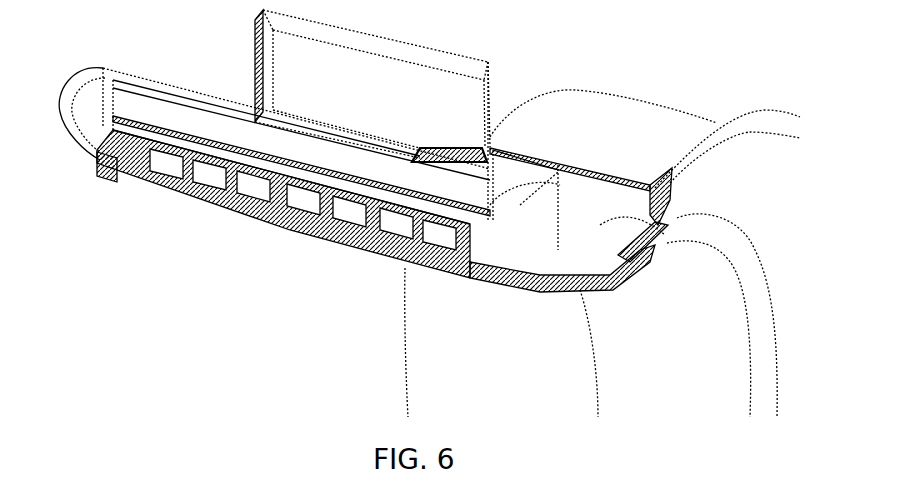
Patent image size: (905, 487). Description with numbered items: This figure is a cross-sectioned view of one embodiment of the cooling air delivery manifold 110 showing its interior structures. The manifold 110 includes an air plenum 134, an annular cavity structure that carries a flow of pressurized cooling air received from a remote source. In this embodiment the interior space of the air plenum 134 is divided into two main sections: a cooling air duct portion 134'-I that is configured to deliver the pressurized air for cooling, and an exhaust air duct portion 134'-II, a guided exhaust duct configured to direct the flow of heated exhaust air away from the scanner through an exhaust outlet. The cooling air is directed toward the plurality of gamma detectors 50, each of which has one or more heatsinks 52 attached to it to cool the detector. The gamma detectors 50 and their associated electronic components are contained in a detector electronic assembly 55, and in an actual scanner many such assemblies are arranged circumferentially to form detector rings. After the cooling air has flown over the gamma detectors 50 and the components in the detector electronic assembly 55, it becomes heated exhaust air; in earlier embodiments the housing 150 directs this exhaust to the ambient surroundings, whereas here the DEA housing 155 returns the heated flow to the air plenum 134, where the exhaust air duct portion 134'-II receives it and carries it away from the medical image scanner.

The housing 150 is at (128, 85).
The DEA housing 155 is at (201, 122).
The gamma detectors 50 is at (215, 202).
The heatsinks 52 is at (122, 157).
The detector electronic assembly 55 is at (217, 234).
The air plenum 134 is at (603, 146).
The cooling air delivery manifold 110 is at (743, 183).
The exhaust air duct portion 134'-II is at (482, 294).
The cooling air duct portion 134'-I is at (581, 317).